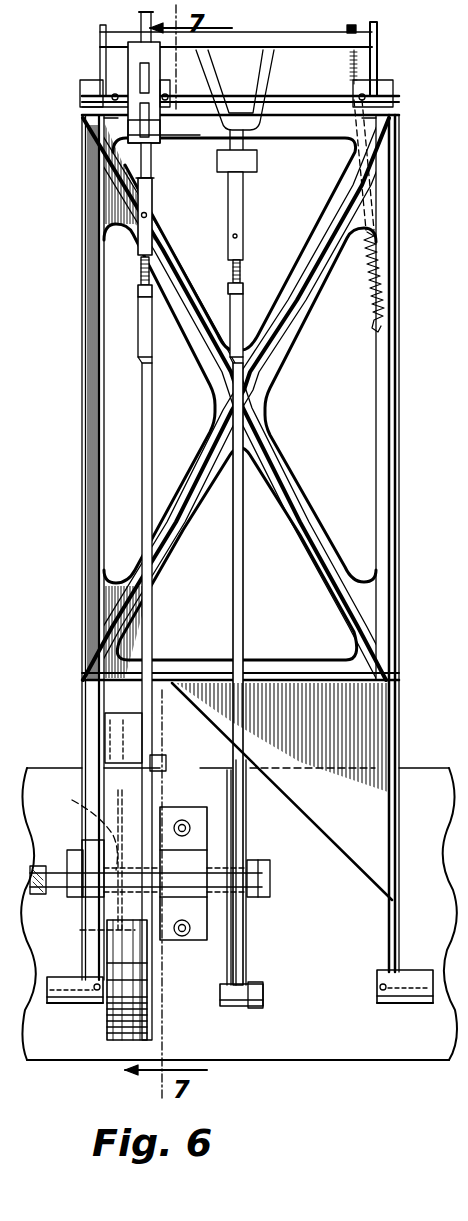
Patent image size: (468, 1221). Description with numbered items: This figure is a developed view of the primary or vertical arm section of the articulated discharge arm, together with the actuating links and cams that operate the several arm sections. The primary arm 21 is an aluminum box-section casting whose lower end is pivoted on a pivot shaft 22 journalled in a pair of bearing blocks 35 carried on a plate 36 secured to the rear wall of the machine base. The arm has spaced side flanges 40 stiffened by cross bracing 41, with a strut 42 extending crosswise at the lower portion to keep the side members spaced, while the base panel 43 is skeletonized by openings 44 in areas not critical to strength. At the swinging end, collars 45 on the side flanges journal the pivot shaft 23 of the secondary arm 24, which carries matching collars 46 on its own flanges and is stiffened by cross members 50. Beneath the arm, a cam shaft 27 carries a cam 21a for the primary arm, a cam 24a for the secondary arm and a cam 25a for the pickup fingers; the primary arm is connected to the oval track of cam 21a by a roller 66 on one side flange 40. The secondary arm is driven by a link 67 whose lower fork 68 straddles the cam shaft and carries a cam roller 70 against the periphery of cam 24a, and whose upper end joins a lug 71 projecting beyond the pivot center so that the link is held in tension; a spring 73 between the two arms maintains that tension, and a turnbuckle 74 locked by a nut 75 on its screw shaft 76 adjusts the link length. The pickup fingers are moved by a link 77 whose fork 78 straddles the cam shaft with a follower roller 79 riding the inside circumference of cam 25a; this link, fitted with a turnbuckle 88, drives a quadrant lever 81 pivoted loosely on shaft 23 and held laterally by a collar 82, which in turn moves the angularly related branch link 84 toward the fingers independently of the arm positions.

The primary arm section 21 is at (399, 478).
The cam for the primary arm 21a is at (105, 930).
The pivot shaft 22 is at (48, 990).
The pivot shaft of the secondary arm 23 is at (300, 96).
The secondary arm 24 is at (378, 57).
The cam for the secondary arm 24a is at (246, 916).
The cam for the pickup fingers 25a is at (148, 1020).
The cam shaft 27 is at (55, 873).
The bearing blocks 35 is at (60, 1004).
The plate 36 is at (432, 792).
The side flanges 40 is at (82, 383).
The cross bracing 41 is at (298, 329).
The strut 42 is at (298, 672).
The base panel 43 is at (322, 234).
The openings 44 is at (104, 495).
The collars 45 is at (82, 98).
The collars 46 is at (122, 117).
The cross members 50 is at (313, 33).
The roller 66 is at (72, 800).
The link 67 is at (233, 616).
The fork 68 is at (246, 836).
The cam roller 70 is at (228, 1008).
The lug 71 is at (262, 73).
The spring 73 is at (378, 246).
The turnbuckle 74 is at (244, 212).
The nut 75 is at (139, 290).
The screw shaft 76 is at (141, 270).
The link 77 is at (152, 403).
The fork 78 is at (160, 800).
The follower roller 79 is at (142, 731).
The quadrant lever 81 is at (128, 64).
The collar 82 is at (162, 128).
The branch link 84 is at (141, 22).
The turnbuckle 88 is at (152, 205).